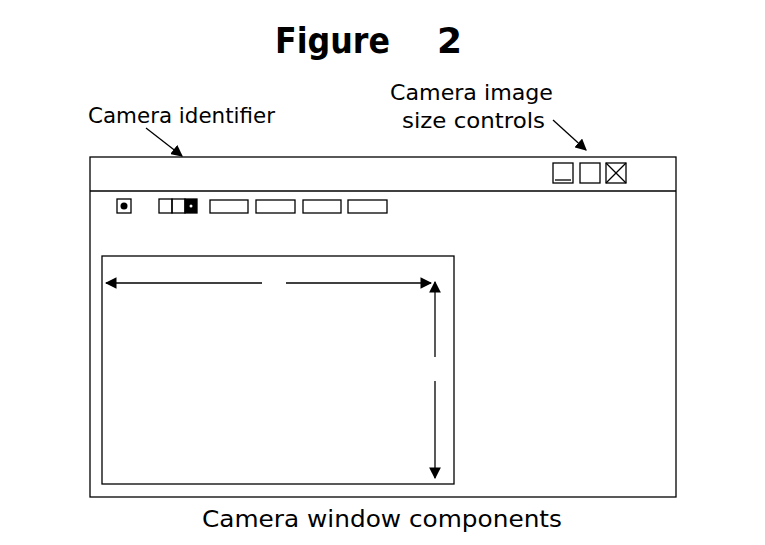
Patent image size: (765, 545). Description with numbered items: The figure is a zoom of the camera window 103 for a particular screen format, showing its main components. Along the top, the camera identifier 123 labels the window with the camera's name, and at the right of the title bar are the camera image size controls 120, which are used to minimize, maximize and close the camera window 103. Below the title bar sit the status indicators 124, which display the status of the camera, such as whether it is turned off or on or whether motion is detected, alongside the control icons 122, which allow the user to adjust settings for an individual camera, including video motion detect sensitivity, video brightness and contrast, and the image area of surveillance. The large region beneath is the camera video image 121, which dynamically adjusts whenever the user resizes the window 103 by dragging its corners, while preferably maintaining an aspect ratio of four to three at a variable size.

The camera window 103 is at (84, 231).
The camera image size controls 120 is at (591, 197).
The camera video image 121 is at (460, 352).
The control icons 122 is at (325, 225).
The camera identifier 123 is at (211, 185).
The status indicators 124 is at (172, 222).